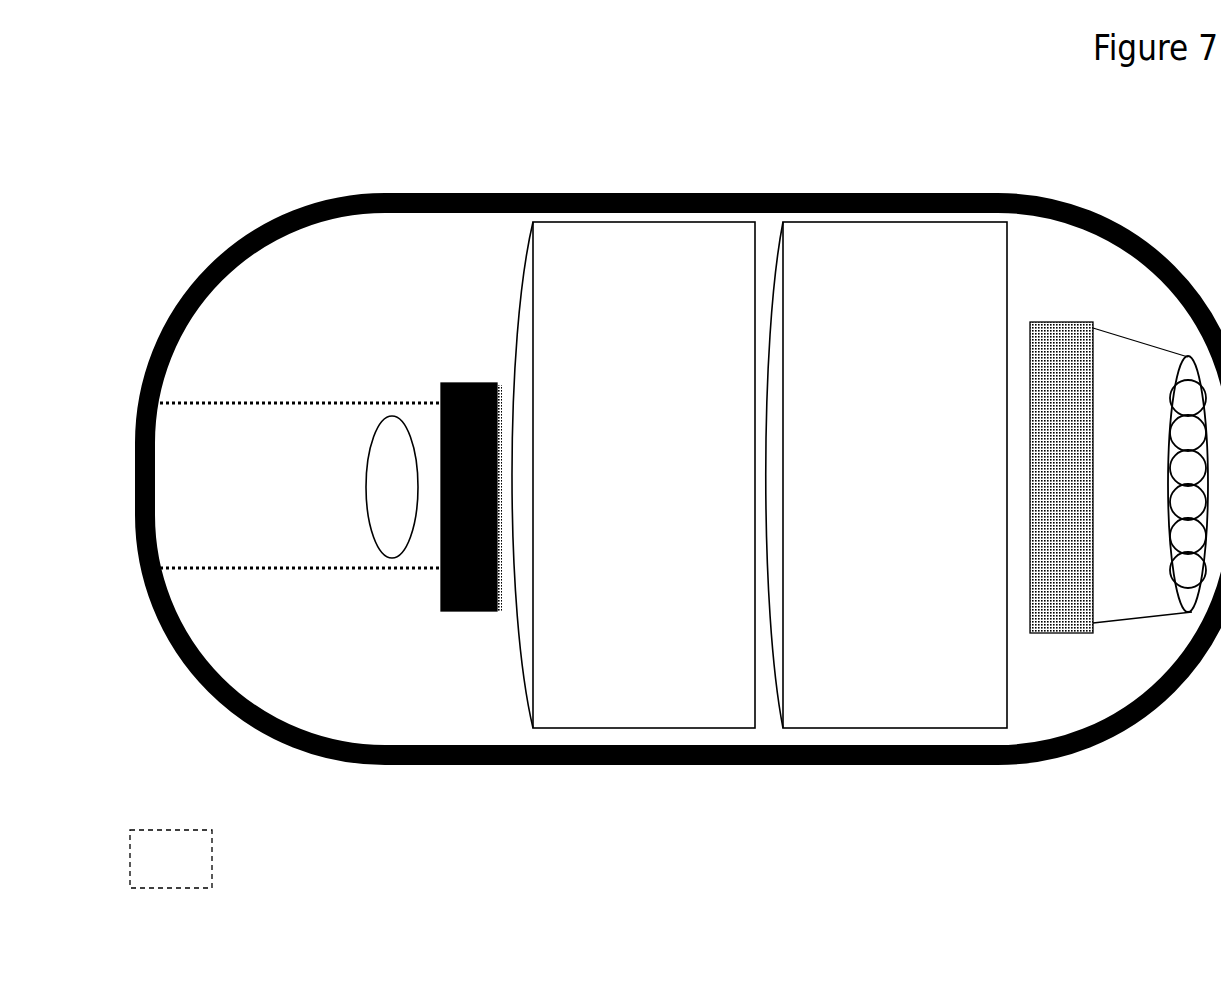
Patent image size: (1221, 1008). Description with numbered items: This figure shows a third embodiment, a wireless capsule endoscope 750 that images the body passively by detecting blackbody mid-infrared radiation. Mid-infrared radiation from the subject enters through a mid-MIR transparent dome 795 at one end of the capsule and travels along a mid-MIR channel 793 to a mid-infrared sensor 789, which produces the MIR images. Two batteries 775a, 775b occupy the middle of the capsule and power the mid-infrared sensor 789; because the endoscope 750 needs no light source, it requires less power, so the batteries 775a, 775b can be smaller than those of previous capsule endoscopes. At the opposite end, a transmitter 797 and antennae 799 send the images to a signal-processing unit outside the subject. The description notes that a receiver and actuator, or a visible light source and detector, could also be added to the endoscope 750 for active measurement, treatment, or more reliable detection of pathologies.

The wireless capsule endoscope 750 is at (171, 859).
The battery 775a is at (633, 475).
The battery 775b is at (886, 475).
The mid-infrared sensor 789 is at (468, 383).
The mid-MIR channel 793 is at (300, 485).
The mid-MIR transparent dome 795 is at (150, 372).
The transmitter 797 is at (1061, 322).
The antennae 799 is at (1172, 450).